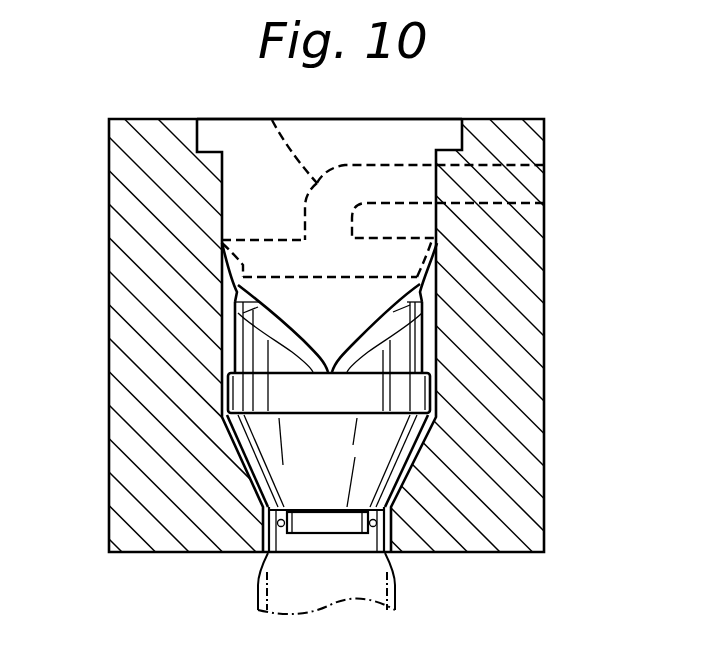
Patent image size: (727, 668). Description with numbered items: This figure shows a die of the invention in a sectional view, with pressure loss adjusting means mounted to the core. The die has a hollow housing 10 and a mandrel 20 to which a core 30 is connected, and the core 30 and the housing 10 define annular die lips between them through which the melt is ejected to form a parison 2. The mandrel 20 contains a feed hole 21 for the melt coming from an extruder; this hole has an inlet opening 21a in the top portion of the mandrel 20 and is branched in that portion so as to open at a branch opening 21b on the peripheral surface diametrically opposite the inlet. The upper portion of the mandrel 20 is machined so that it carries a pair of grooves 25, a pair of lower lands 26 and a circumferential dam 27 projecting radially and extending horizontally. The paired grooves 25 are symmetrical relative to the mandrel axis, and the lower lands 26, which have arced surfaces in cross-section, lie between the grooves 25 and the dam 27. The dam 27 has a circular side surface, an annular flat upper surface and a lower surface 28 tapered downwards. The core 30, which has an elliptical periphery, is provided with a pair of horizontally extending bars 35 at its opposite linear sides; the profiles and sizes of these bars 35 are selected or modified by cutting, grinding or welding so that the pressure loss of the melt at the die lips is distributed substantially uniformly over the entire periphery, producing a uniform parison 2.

The hollow housing 10 is at (545, 135).
The mandrel 20 is at (400, 135).
The feed hole 21 is at (272, 120).
The inlet opening 21a is at (546, 183).
The branch opening 21b is at (244, 264).
The grooves 25 is at (255, 315).
The lower lands 26 is at (240, 352).
The circumferential dam 27 is at (432, 395).
The lower surface 28 is at (390, 453).
The core 30 is at (323, 542).
The bars 35 is at (398, 548).
The parison 2 is at (258, 584).